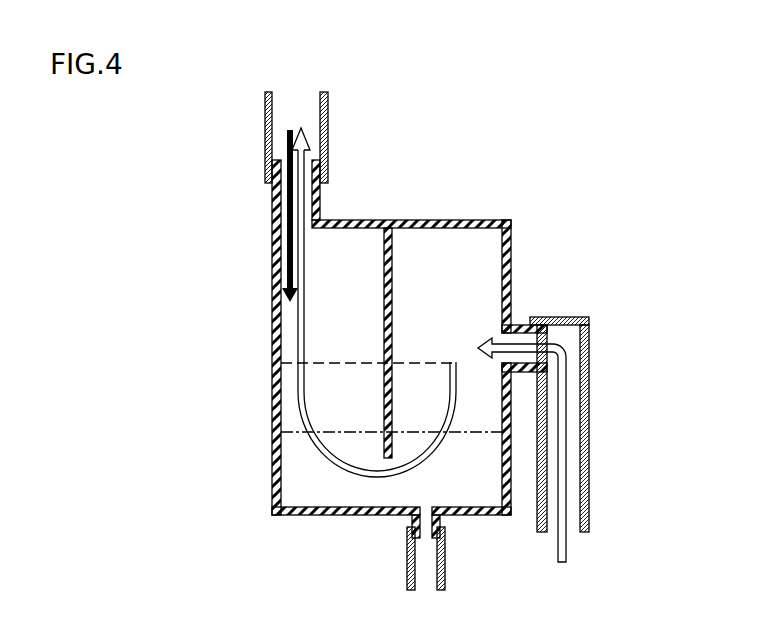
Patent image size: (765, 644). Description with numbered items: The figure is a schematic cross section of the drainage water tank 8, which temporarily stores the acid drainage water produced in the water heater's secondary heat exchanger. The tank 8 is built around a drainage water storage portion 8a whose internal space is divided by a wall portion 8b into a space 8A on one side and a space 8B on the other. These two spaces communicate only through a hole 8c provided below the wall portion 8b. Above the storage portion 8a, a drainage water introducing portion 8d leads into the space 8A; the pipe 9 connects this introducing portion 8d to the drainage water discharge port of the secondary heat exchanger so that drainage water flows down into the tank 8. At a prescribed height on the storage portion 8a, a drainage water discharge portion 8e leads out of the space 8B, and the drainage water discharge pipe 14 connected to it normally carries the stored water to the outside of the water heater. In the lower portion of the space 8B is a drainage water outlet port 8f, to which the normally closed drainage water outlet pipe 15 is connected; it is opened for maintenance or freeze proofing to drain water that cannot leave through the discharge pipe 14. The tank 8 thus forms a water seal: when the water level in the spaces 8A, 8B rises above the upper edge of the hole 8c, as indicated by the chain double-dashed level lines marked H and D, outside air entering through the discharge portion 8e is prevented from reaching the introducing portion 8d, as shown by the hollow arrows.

The drainage water tank 8 is at (394, 357).
The space 8A is at (352, 303).
The space 8B is at (462, 303).
The drainage water storage portion 8a is at (491, 220).
The wall portion 8b is at (400, 262).
The hole 8c is at (385, 487).
The drainage water introducing portion 8d is at (273, 203).
The drainage water discharge portion 8e is at (517, 325).
The drainage water outlet port 8f is at (445, 530).
The pipe 9 is at (265, 110).
The drainage water discharge pipe 14 is at (590, 467).
The drainage water outlet pipe 15 is at (407, 570).
The liquid level height H is at (288, 363).
The depth line D is at (305, 470).